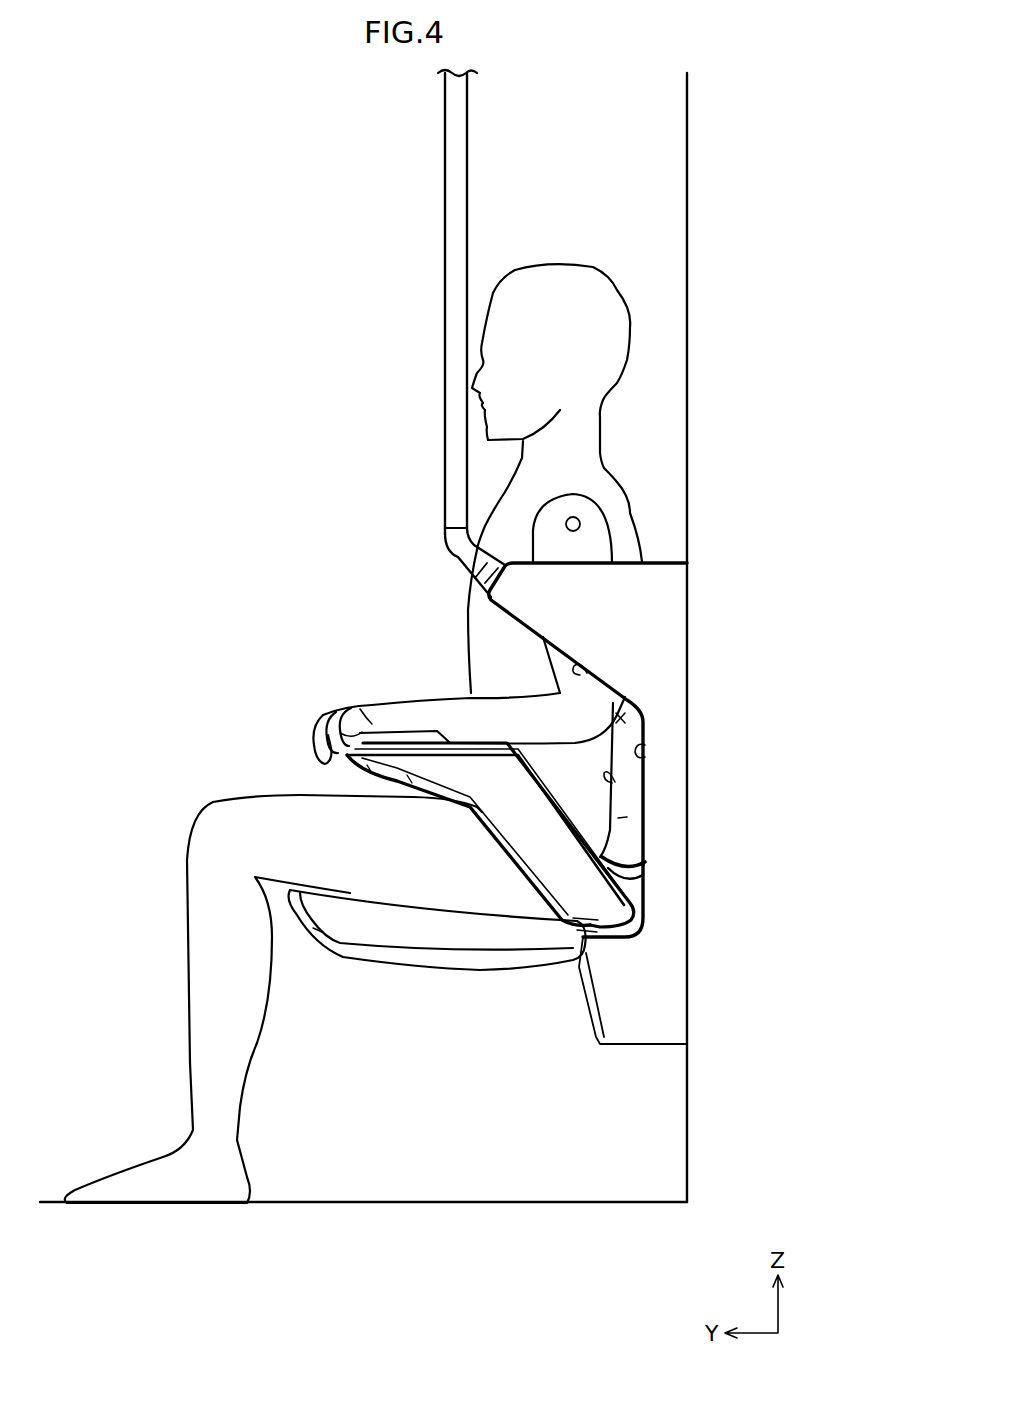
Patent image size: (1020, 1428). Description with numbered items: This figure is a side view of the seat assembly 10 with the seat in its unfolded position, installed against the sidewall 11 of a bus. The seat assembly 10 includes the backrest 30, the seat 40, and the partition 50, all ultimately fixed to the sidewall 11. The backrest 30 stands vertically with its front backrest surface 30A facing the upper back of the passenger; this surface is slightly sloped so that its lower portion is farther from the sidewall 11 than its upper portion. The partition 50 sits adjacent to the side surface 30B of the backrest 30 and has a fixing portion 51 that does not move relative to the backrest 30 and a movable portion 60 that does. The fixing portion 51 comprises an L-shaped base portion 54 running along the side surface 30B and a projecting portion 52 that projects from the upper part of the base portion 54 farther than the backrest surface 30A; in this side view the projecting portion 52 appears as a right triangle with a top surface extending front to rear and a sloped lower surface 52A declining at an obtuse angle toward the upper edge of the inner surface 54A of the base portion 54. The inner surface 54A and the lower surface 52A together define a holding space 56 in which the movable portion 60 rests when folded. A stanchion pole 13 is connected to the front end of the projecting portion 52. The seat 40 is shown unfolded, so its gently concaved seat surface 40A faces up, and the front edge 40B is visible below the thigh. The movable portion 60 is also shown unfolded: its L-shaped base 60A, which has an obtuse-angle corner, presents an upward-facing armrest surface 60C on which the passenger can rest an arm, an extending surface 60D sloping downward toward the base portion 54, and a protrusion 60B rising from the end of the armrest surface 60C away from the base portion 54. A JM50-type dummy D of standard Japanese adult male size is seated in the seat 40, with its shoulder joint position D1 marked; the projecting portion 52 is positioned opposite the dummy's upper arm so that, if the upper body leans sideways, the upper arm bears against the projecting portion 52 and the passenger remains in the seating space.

The seat assembly 10 is at (517, 537).
The sidewall 11 is at (680, 438).
The stanchion pole 13 is at (452, 108).
The backrest 30 is at (661, 834).
The backrest surface 30A is at (615, 783).
The side surface 30B is at (627, 817).
The seat 40 is at (360, 979).
The seat surface 40A is at (440, 907).
The seat cushion front edge 40B is at (502, 970).
The partition 50 is at (551, 788).
The fixing portion 51 is at (705, 879).
The projecting portion 52 is at (545, 592).
The lower surface 52A is at (587, 673).
The base portion 54 is at (668, 762).
The inner surface 54A is at (645, 746).
The holding space 56 is at (622, 716).
The movable portion 60 is at (648, 896).
The base 60A is at (478, 755).
The protrusion 60B is at (363, 734).
The armrest surface 60C is at (433, 740).
The extending surface 60D is at (570, 818).
The dummy D is at (613, 310).
The shoulder joint position D1 is at (576, 517).